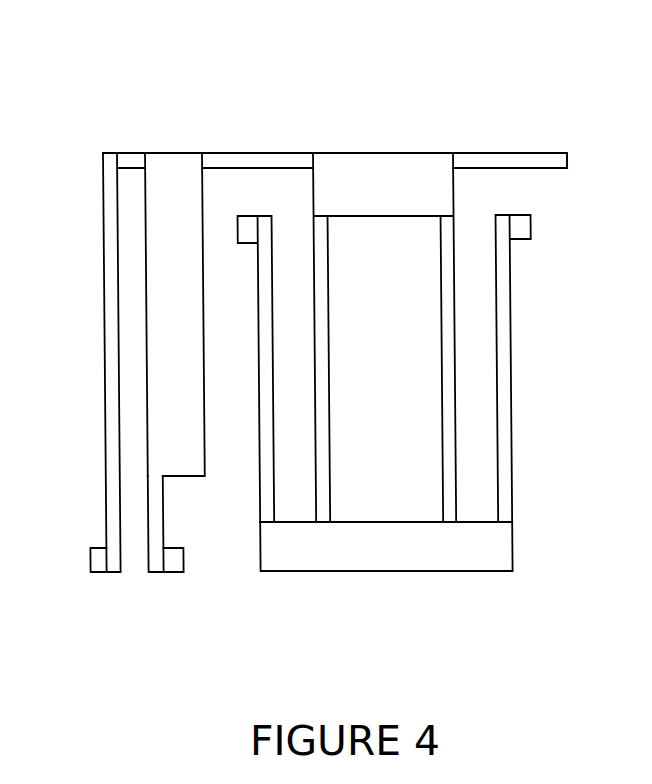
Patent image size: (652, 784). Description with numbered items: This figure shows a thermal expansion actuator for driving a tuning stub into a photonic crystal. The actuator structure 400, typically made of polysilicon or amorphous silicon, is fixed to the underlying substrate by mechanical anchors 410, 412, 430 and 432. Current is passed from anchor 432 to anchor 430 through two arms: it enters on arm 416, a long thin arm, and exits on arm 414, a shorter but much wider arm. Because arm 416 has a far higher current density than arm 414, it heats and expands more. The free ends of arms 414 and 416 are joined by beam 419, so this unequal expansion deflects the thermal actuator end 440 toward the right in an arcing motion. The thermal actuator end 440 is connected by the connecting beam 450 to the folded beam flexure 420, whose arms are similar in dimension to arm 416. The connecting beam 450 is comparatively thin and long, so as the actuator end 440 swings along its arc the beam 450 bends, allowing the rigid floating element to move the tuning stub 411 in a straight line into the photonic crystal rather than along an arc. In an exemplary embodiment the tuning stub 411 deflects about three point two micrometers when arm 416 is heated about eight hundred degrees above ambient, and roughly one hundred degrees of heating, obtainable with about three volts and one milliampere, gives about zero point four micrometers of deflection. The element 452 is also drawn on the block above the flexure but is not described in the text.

The actuator structure 400 is at (326, 58).
The mechanical anchor 410 is at (527, 227).
The tuning stub 411 is at (512, 157).
The mechanical anchor 412 is at (245, 232).
The arm 414 is at (185, 465).
The arm 416 is at (113, 513).
The beam 419 is at (130, 157).
The folded beam flexure 420 is at (477, 364).
The mechanical anchor 430 is at (171, 569).
The mechanical anchor 432 is at (90, 562).
The thermal actuator end 440 is at (196, 136).
The connecting beam 450 is at (255, 157).
The top block of frame 452 is at (372, 157).